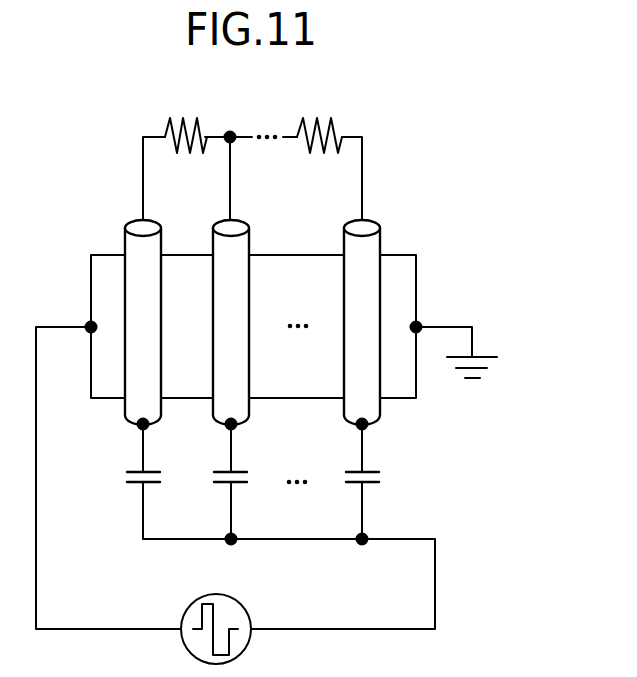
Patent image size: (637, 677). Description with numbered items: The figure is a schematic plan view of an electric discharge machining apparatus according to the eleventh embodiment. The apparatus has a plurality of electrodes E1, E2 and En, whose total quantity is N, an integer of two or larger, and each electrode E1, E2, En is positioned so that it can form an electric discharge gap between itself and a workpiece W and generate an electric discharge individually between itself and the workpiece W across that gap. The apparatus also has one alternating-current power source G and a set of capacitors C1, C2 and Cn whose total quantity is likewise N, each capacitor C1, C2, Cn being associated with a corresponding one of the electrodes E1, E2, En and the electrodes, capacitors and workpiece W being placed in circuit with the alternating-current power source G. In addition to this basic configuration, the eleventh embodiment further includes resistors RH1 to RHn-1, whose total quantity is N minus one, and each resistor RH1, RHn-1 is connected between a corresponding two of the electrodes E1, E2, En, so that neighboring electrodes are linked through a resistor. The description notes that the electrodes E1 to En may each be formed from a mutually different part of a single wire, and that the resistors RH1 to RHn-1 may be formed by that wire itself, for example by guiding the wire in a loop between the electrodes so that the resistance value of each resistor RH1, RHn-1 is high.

The workpiece W is at (91, 272).
The electrode E1 is at (159, 217).
The electrode E2 is at (246, 217).
The electrode En is at (377, 217).
The resistor RH1 is at (185, 117).
The resistor RHn-1 is at (317, 117).
The capacitor C1 is at (153, 472).
The capacitor C2 is at (240, 472).
The capacitor Cn is at (371, 472).
The alternating-current power source G is at (245, 605).